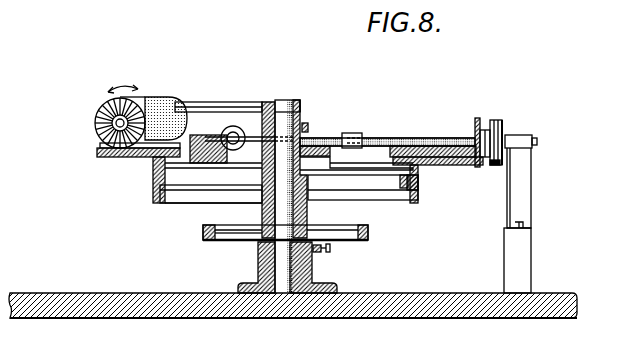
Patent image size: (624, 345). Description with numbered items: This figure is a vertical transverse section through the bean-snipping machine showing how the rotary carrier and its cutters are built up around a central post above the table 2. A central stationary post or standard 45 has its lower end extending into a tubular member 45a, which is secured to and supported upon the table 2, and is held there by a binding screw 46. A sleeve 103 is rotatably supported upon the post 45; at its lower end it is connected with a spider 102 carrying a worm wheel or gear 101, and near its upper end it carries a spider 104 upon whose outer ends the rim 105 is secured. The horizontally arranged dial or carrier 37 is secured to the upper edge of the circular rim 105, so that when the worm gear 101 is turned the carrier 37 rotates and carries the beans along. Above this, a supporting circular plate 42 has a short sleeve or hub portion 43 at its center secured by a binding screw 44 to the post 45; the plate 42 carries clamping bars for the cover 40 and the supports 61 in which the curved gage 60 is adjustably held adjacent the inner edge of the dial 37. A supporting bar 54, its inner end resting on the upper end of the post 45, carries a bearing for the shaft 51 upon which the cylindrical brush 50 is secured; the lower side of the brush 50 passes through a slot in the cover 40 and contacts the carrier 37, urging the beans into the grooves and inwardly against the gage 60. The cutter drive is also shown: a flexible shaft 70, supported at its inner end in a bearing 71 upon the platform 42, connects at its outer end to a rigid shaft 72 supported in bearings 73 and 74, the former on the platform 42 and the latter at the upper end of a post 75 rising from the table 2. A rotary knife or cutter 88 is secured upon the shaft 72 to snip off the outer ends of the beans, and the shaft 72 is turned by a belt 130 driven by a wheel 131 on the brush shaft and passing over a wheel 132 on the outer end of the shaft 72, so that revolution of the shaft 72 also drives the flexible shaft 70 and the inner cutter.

The table 2 is at (208, 318).
The dial or carrier 37 is at (118, 160).
The cover 40 is at (456, 140).
The supporting circular plate 42 is at (380, 138).
The sleeve or hub portion 43 is at (195, 187).
The binding screw 44 is at (356, 162).
The post or standard 45 is at (296, 103).
The tubular member 45a is at (312, 272).
The binding screw 46 is at (330, 248).
The cylindrical brush 50 is at (108, 103).
The shaft 51 is at (94, 122).
The supporting bar 54 is at (207, 102).
The curved gage 60 is at (168, 170).
The supports 61 is at (185, 190).
The flexible shaft 70 is at (318, 138).
The bearing 71 is at (258, 125).
The rigid shaft 72 is at (385, 146).
The bearing 73 is at (350, 133).
The bearing 74 is at (537, 141).
The post 75 is at (522, 181).
The rotary knife or cutter 88 is at (480, 120).
The worm wheel or gear 101 is at (195, 240).
The spider 102 is at (240, 240).
The sleeve 103 is at (262, 214).
The spider 104 is at (190, 205).
The rim 105 is at (155, 185).
The belt 130 is at (502, 122).
The wheel 131 is at (493, 168).
The wheel 132 is at (504, 128).